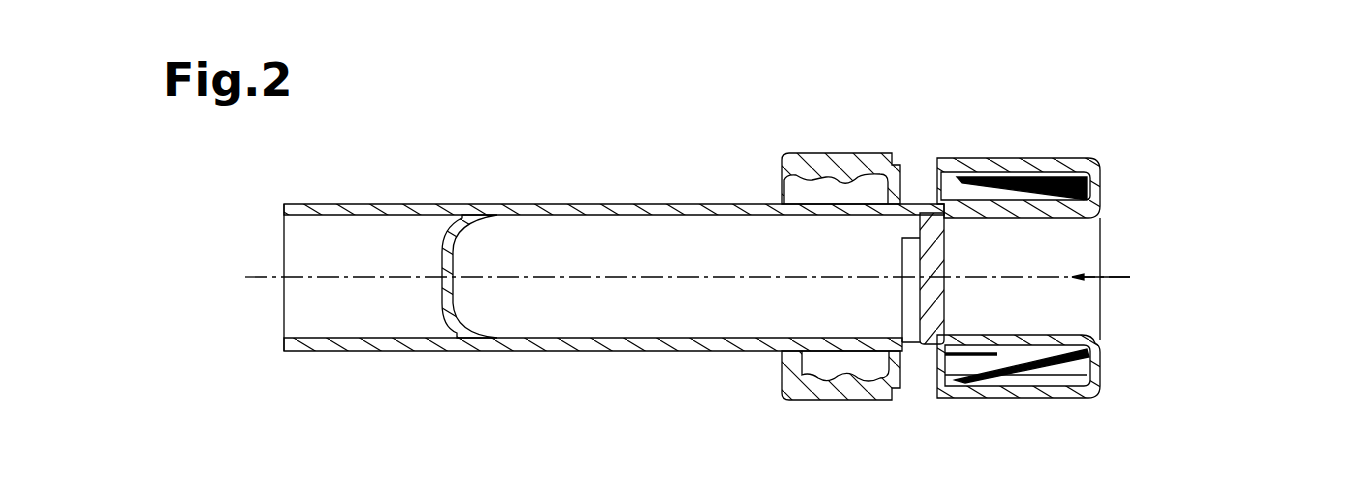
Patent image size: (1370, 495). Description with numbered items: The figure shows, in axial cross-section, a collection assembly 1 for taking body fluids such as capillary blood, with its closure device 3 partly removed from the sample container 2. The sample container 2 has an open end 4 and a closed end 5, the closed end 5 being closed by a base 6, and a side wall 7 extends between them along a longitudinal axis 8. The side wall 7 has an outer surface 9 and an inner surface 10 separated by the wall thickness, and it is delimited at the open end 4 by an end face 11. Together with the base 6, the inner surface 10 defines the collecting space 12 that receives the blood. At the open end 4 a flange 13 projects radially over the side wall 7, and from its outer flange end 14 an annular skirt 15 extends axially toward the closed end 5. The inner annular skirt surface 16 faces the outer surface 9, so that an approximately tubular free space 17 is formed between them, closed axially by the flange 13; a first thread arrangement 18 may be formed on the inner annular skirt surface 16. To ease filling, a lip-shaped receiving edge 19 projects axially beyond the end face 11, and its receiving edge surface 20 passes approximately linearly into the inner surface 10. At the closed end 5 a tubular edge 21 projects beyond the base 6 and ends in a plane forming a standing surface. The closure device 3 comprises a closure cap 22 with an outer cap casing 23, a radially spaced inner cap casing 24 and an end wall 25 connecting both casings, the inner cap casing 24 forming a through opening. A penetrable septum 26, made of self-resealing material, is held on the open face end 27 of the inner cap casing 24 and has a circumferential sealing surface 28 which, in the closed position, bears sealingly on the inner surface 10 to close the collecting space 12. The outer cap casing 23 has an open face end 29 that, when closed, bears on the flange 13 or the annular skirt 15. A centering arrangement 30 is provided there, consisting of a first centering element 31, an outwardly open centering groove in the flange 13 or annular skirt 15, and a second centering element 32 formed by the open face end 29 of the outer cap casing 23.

The collection assembly 1 is at (1190, 131).
The sample container 2 is at (545, 200).
The closure device 3 is at (1068, 153).
The open end 4 is at (913, 352).
The closed end 5 is at (447, 204).
The base 6 is at (442, 247).
The side wall 7 is at (534, 352).
The longitudinal axis 8 is at (268, 272).
The outer surface 9 is at (688, 203).
The inner surface 10 is at (678, 215).
The end face 11 is at (925, 350).
The collecting space 12 is at (607, 318).
The flange 13 is at (918, 165).
The outer flange end 14 is at (905, 352).
The annular skirt 15 is at (813, 158).
The inner annular skirt surface 16 is at (786, 160).
The free space 17 is at (782, 372).
The first thread arrangement 18 is at (784, 186).
The receiving edge 19 is at (997, 162).
The receiving edge surface 20 is at (1027, 218).
The tubular edge 21 is at (372, 351).
The closure cap 22 is at (1105, 213).
The outer cap casing 23 is at (1020, 160).
The inner cap casing 24 is at (1012, 335).
The end wall 25 is at (1102, 356).
The septum 26 is at (944, 254).
The open face end 27 is at (925, 218).
The sealing surface 28 is at (942, 384).
The open face end 29 is at (934, 386).
The centering arrangement 30 is at (908, 146).
The first centering element 31 is at (900, 158).
The second centering element 32 is at (947, 162).